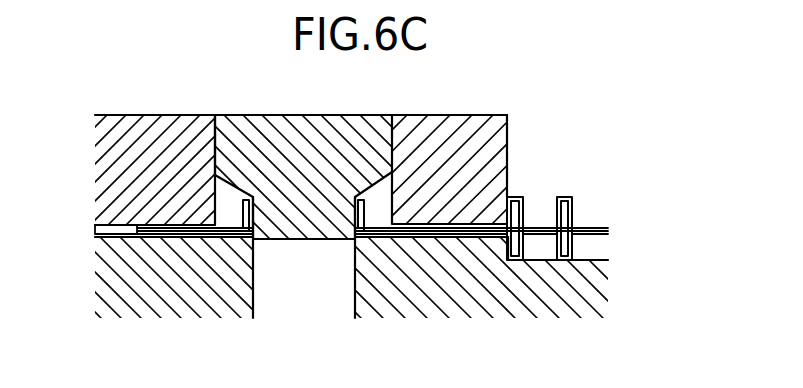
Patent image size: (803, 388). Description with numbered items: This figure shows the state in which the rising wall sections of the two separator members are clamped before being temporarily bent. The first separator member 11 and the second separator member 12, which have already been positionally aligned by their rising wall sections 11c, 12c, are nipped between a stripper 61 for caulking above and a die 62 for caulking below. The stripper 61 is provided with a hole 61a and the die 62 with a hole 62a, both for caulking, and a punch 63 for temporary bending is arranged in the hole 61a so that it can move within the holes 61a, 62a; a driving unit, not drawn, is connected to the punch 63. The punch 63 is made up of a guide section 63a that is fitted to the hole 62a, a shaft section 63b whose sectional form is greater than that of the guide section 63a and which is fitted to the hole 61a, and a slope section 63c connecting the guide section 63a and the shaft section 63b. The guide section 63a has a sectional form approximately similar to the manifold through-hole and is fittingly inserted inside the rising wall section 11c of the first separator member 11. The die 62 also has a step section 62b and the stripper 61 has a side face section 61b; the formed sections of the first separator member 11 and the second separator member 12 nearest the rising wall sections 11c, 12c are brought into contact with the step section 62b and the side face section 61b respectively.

The first separator member 11 is at (597, 238).
The rising wall section 11c is at (350, 218).
The second separator member 12 is at (588, 223).
The rising wall section 12c is at (243, 213).
The stripper 61 is at (445, 128).
The hole 61a is at (216, 200).
The side face section 61b is at (507, 146).
The die 62 is at (451, 302).
The hole 62a is at (353, 282).
The step section 62b is at (523, 250).
The punch 63 is at (315, 197).
The guide section 63a is at (279, 242).
The shaft section 63b is at (266, 126).
The slope section 63c is at (367, 178).